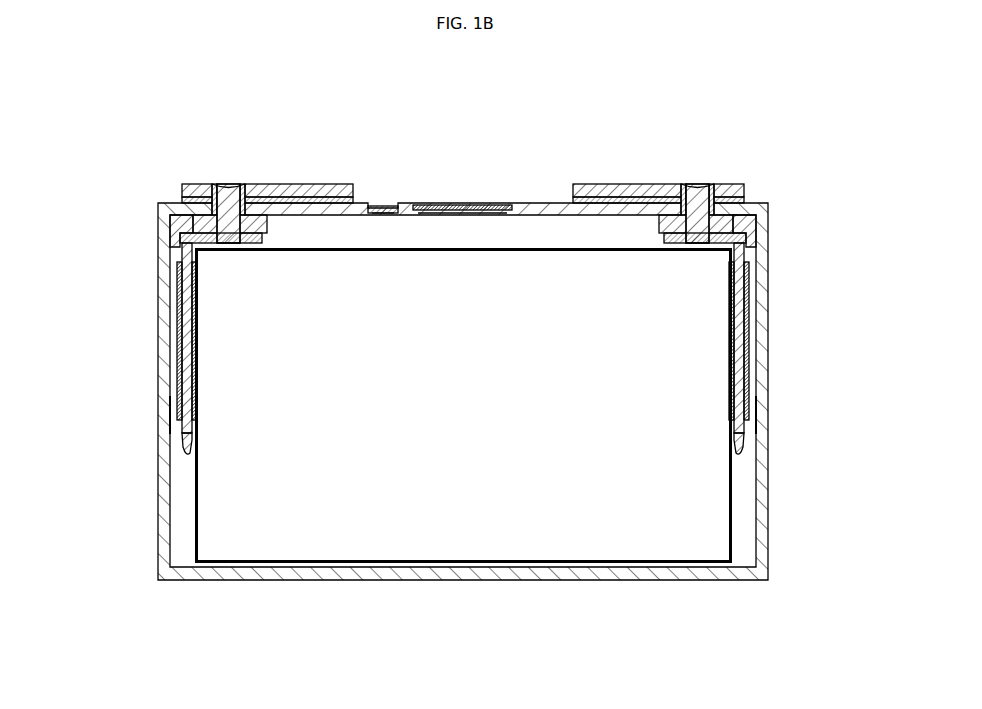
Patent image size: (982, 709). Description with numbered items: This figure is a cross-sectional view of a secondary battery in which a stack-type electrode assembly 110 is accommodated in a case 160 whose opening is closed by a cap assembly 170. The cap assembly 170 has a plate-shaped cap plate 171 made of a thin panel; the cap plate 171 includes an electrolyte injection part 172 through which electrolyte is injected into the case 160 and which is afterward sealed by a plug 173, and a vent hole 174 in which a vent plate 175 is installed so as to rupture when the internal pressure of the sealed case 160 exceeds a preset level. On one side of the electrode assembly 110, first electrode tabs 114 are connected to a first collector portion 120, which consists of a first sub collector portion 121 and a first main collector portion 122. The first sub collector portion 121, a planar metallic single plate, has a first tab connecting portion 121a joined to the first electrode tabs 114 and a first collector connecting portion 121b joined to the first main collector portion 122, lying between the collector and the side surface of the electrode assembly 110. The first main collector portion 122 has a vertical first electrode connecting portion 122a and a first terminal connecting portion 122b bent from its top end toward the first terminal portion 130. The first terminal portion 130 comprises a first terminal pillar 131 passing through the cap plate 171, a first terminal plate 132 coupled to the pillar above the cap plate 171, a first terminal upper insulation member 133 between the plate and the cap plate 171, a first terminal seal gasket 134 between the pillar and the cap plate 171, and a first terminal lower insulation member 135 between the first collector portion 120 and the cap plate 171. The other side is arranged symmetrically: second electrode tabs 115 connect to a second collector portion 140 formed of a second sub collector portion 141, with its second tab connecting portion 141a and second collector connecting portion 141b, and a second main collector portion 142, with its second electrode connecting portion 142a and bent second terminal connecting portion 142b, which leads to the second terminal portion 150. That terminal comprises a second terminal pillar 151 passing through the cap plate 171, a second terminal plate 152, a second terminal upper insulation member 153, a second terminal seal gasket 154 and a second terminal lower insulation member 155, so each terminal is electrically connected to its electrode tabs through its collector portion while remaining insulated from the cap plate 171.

The electrode assembly 110 is at (405, 571).
The first electrode tabs 114 is at (168, 432).
The second electrode tabs 115 is at (758, 432).
The first collector portion 120 is at (134, 335).
The first sub collector portion 121 is at (125, 341).
The first tab connecting portion 121a is at (100, 311).
The first collector connecting portion 121b is at (192, 316).
The first main collector portion 122 is at (158, 335).
The first electrode connecting portion 122a is at (146, 348).
The first terminal connecting portion 122b is at (182, 237).
The first terminal portion 130 is at (255, 165).
The first terminal pillar 131 is at (228, 183).
The first terminal plate 132 is at (254, 185).
The first terminal upper insulation member 133 is at (184, 200).
The first terminal seal gasket 134 is at (213, 186).
The first terminal lower insulation member 135 is at (268, 225).
The second collector portion 140 is at (793, 335).
The second sub collector portion 141 is at (801, 341).
The second tab connecting portion 141a is at (826, 311).
The second collector connecting portion 141b is at (734, 316).
The second main collector portion 142 is at (769, 335).
The second electrode connecting portion 142a is at (780, 348).
The second terminal connecting portion 142b is at (744, 237).
The second terminal portion 150 is at (671, 165).
The second terminal pillar 151 is at (698, 183).
The second terminal plate 152 is at (670, 185).
The second terminal upper insulation member 153 is at (742, 200).
The second terminal seal gasket 154 is at (713, 186).
The second terminal lower insulation member 155 is at (658, 225).
The case 160 is at (583, 581).
The cap assembly 170 is at (463, 174).
The cap plate 171 is at (527, 210).
The electrolyte injection part 172 is at (385, 216).
The plug 173 is at (383, 207).
The vent hole 174 is at (478, 217).
The vent plate 175 is at (458, 206).